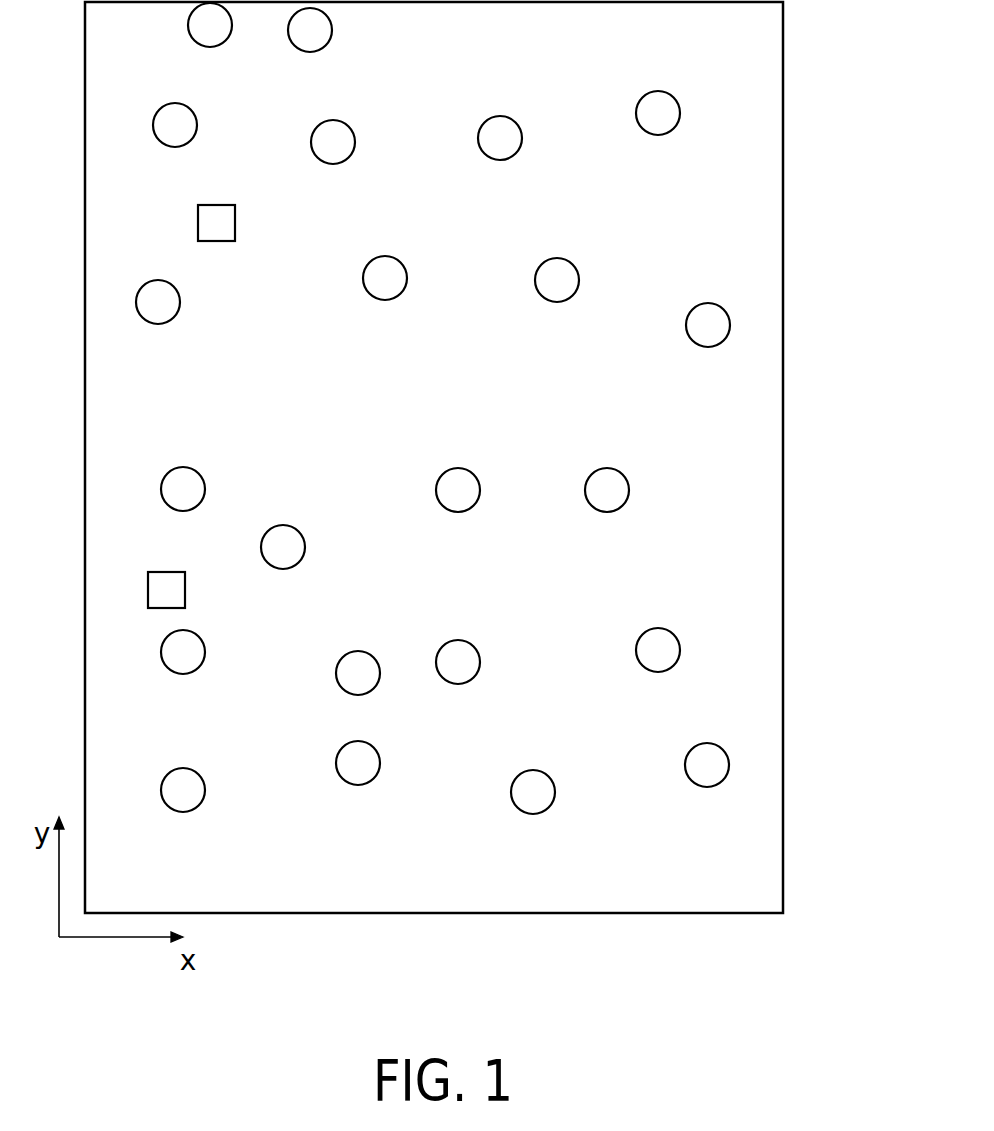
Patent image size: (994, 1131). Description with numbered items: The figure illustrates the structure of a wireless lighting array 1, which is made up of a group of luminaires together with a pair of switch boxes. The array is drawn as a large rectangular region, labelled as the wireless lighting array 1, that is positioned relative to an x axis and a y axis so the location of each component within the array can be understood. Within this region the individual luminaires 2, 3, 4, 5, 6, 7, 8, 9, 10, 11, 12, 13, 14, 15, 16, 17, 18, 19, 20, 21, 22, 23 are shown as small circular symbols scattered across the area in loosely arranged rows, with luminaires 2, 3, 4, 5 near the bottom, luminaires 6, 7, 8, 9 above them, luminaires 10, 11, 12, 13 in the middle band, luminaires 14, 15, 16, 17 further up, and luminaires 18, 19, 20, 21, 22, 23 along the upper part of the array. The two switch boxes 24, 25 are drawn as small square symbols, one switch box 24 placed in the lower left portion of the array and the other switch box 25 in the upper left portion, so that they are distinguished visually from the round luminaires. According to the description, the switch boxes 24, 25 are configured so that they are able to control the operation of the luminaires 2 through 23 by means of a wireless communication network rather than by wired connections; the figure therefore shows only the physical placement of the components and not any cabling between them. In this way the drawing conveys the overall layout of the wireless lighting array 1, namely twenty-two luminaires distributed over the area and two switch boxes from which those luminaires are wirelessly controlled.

The wireless lighting array 1 is at (788, 45).
The luminaire 2 is at (707, 787).
The luminaire 3 is at (533, 814).
The luminaire 4 is at (358, 785).
The luminaire 5 is at (183, 812).
The luminaire 6 is at (680, 652).
The luminaire 7 is at (480, 664).
The luminaire 8 is at (337, 677).
The luminaire 9 is at (183, 674).
The luminaire 10 is at (629, 490).
The luminaire 11 is at (480, 490).
The luminaire 12 is at (305, 547).
The luminaire 13 is at (205, 489).
The luminaire 14 is at (687, 328).
The luminaire 15 is at (579, 280).
The luminaire 16 is at (407, 280).
The luminaire 17 is at (180, 305).
The luminaire 18 is at (680, 115).
The luminaire 19 is at (522, 140).
The luminaire 20 is at (355, 146).
The luminaire 21 is at (197, 129).
The luminaire 22 is at (331, 36).
The luminaire 23 is at (190, 28).
The switch box 24 is at (185, 590).
The switch box 25 is at (235, 222).